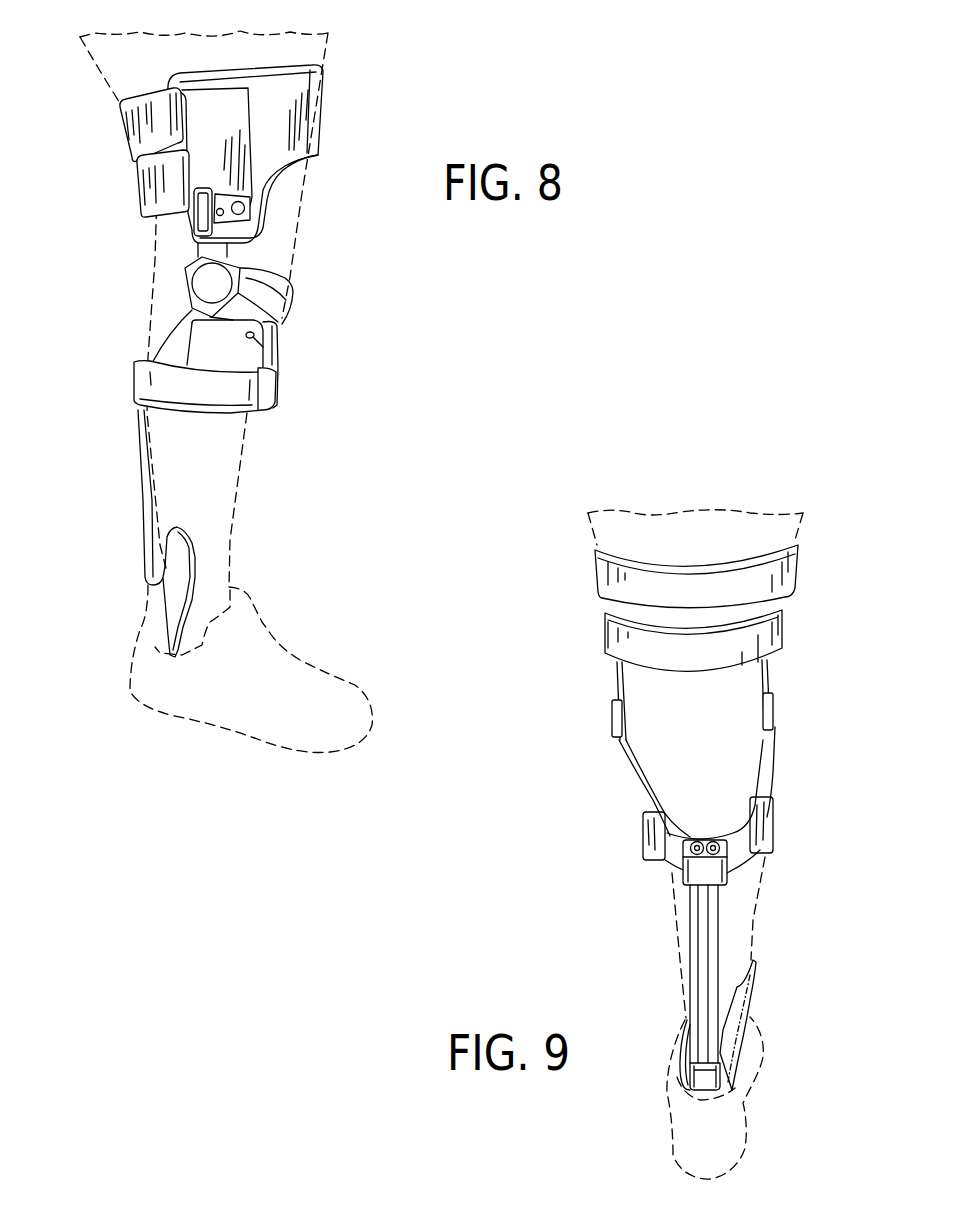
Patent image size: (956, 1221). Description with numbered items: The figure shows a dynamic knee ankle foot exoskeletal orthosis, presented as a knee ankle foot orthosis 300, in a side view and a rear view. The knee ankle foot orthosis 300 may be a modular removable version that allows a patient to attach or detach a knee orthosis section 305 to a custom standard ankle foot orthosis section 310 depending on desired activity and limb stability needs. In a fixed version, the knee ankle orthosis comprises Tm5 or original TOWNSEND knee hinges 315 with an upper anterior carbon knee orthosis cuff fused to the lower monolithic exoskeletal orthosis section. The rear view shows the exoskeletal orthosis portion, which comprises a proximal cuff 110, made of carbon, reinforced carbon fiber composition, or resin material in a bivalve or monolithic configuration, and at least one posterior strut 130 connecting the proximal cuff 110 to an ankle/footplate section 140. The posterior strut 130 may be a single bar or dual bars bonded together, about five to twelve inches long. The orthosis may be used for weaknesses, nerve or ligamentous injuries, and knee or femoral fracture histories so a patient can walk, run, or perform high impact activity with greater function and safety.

In FIG. 8, the knee ankle foot orthosis 300 is at (356, 386).
In FIG. 8, the knee orthosis section 305 is at (283, 147).
In FIG. 9, the knee orthosis section 305 is at (785, 641).
In FIG. 8, the ankle foot orthosis section 310 is at (115, 501).
In FIG. 8, the knee hinges 315 is at (242, 278).
In FIG. 9, the proximal cuff 110 is at (773, 814).
In FIG. 9, the posterior strut 130 is at (723, 927).
In FIG. 9, the ankle/footplate section 140 is at (753, 1003).